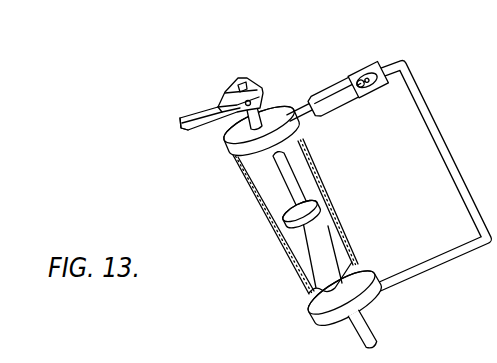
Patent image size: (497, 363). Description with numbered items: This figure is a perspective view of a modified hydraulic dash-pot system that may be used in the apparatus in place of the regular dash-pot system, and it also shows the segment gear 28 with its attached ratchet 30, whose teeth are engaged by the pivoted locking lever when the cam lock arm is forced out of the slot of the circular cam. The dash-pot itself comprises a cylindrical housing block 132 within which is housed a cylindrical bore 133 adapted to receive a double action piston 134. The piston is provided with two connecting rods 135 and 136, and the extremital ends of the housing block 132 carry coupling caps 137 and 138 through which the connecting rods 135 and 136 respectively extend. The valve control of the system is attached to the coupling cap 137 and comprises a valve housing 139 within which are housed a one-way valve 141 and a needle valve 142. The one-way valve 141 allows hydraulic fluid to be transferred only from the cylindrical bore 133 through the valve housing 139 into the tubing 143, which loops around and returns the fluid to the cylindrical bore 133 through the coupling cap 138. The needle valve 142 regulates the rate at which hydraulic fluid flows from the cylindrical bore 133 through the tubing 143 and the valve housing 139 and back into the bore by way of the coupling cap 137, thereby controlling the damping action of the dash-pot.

The segment gear 28 is at (212, 96).
The ratchet 30 is at (190, 129).
The cylindrical housing block 132 is at (300, 271).
The cylindrical bore 133 is at (275, 189).
The double action piston 134 is at (317, 210).
The connecting rod 135 is at (284, 178).
The connecting rod 136 is at (317, 240).
The coupling cap 137 is at (283, 113).
The coupling cap 138 is at (367, 298).
The valve housing 139 is at (317, 93).
The one-way valve 141 is at (339, 90).
The needle valve 142 is at (366, 80).
The tubing 143 is at (431, 114).